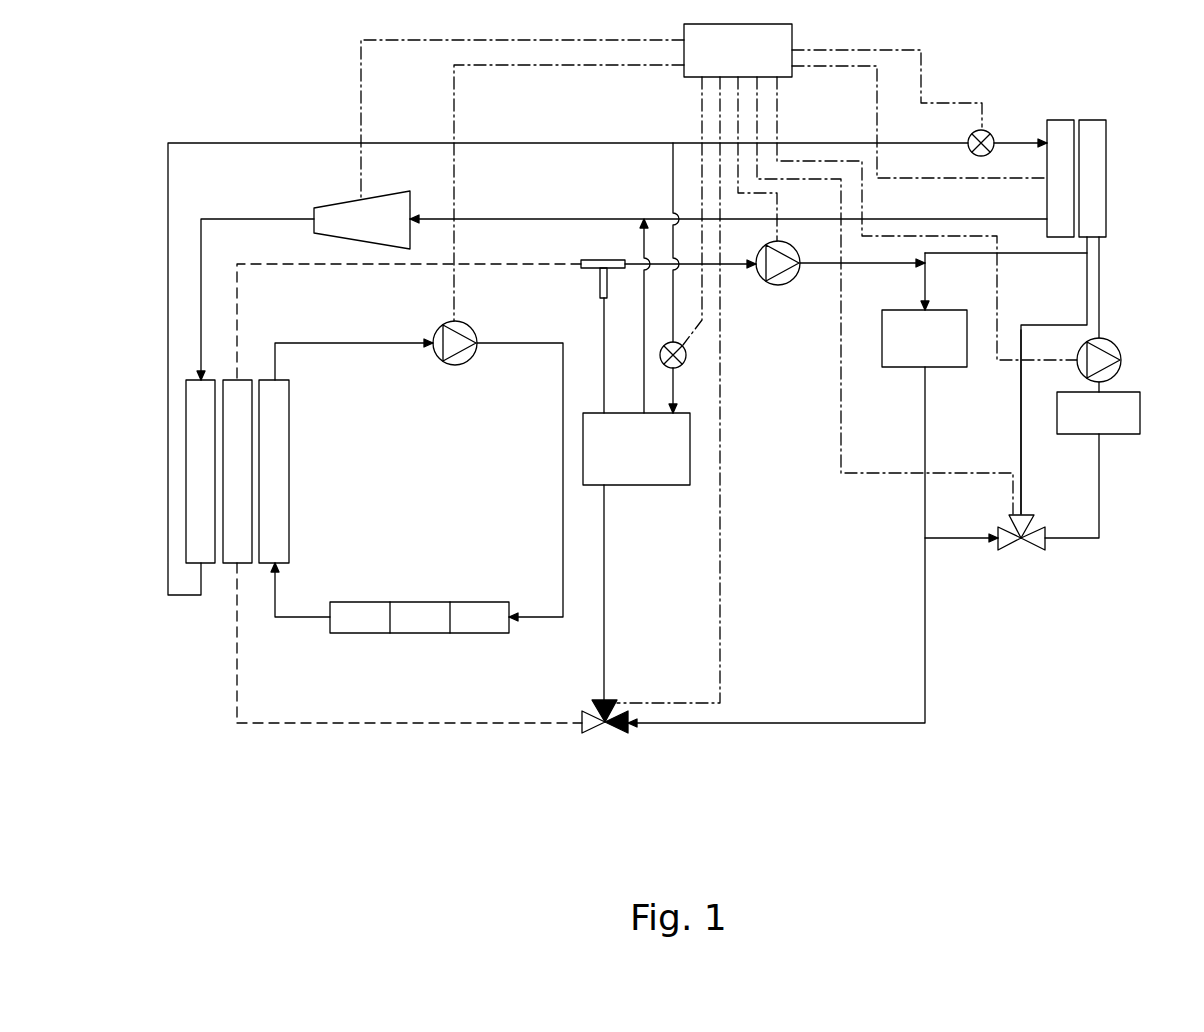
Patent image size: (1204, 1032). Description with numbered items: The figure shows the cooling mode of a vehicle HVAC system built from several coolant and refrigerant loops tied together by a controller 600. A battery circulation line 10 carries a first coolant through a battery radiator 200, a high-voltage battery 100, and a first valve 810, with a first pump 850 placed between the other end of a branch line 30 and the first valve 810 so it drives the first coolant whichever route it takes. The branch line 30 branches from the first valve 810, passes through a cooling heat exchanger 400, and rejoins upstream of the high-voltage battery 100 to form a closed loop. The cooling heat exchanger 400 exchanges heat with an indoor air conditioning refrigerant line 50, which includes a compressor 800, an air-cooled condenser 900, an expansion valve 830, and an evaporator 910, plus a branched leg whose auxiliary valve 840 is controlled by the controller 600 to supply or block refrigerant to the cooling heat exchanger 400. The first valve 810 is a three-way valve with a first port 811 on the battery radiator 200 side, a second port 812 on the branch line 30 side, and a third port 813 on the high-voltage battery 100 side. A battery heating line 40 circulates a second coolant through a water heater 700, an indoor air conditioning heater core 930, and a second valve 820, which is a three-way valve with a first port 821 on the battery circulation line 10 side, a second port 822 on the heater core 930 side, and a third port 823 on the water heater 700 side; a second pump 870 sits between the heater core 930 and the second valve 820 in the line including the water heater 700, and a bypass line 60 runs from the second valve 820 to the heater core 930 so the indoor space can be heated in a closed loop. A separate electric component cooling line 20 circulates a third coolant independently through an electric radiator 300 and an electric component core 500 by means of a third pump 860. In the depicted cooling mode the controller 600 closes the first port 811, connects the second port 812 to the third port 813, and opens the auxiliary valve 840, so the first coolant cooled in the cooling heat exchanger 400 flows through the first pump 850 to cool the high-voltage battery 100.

The battery circulation line 10 is at (530, 267).
The electric component cooling line 20 is at (357, 344).
The branch line 30 is at (606, 592).
The battery heating line 40 is at (1037, 255).
The indoor air conditioning refrigerant line 50 is at (577, 143).
The bypass line 60 is at (1020, 417).
The high-voltage battery 100 is at (903, 368).
The battery radiator 200 is at (247, 378).
The electric radiator 300 is at (290, 478).
The cooling heat exchanger 400 is at (657, 487).
The electric component core 500 is at (418, 602).
The controller 600 is at (792, 33).
The water heater 700 is at (1122, 436).
The compressor 800 is at (313, 206).
The first valve 810 is at (579, 731).
The first port 811 is at (583, 735).
The second port 812 is at (595, 700).
The third port 813 is at (620, 737).
The second valve 820 is at (1046, 540).
The first port 821 is at (998, 552).
The second port 822 is at (1030, 512).
The third port 823 is at (1035, 551).
The expansion valve 830 is at (982, 126).
The auxiliary valve 840 is at (687, 358).
The first pump 850 is at (785, 286).
The third pump 860 is at (452, 366).
The second pump 870 is at (1115, 344).
The air-cooled condenser 900 is at (210, 565).
The evaporator 910 is at (1060, 118).
The indoor air conditioning heater core 930 is at (1095, 118).